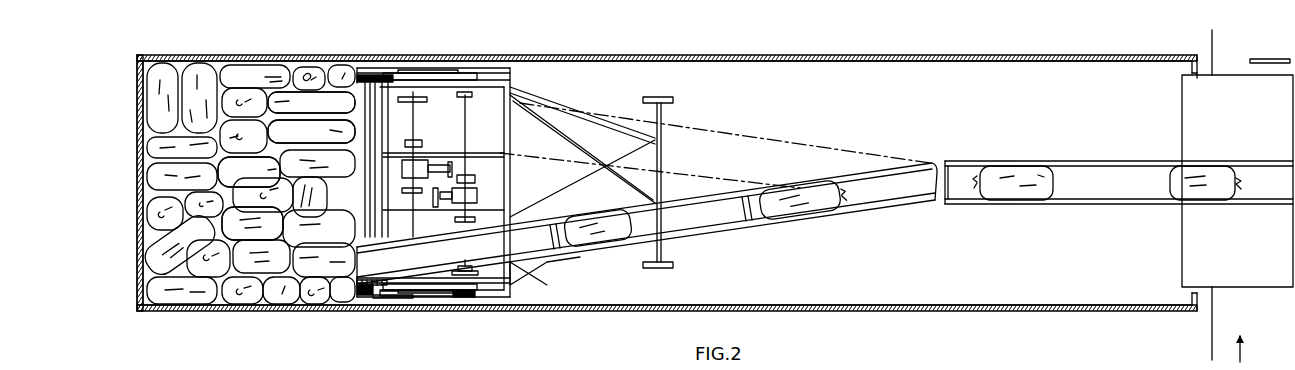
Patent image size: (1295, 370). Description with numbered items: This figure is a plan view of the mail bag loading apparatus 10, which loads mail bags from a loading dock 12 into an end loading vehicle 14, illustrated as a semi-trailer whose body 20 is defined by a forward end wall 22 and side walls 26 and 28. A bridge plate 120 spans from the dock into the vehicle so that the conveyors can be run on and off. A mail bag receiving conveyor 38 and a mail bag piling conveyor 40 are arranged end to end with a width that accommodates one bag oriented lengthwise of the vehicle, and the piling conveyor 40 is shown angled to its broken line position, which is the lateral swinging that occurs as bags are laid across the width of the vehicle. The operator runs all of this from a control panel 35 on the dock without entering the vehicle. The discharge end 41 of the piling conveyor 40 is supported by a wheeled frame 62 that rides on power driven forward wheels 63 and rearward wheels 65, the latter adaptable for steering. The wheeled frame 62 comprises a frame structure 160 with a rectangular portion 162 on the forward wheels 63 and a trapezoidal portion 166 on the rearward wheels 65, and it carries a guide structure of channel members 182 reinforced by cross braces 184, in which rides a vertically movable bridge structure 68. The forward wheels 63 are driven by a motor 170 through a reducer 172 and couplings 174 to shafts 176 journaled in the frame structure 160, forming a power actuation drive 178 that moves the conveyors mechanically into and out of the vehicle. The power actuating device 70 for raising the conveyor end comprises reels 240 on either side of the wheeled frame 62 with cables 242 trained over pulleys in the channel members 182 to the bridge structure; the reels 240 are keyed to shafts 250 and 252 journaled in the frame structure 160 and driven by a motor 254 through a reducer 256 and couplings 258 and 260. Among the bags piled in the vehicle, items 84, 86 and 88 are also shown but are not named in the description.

The loading apparatus embodiment 10 is at (1105, 80).
The loading dock 12 is at (1224, 317).
The end loading vehicle 14 is at (135, 226).
The body 20 is at (1080, 50).
The forward end wall 22 is at (137, 129).
The side wall 26 is at (885, 305).
The side wall 28 is at (905, 62).
The control panel 35 is at (1272, 58).
The mail bag receiving conveyor 38 is at (1112, 153).
The mail bag piling conveyor 40 is at (663, 223).
The discharge end 41 is at (350, 300).
The wheeled frame 62 is at (586, 272).
The forward wheels 63 is at (415, 96).
The rearward wheels 65 is at (660, 97).
The bridge structure 68 is at (342, 222).
The power actuating device 70 is at (469, 304).
The conveyor belt 84 is at (872, 190).
The belt cleat 86 is at (725, 213).
The lower guide bar 88 is at (425, 298).
The bridge plate 120 is at (1266, 262).
The frame structure 160 is at (530, 280).
The rectangular portion 162 is at (488, 70).
The trapezoidal portion 166 is at (574, 102).
The motor 170 is at (443, 163).
The reducer 172 is at (385, 150).
The couplings 174 is at (380, 115).
The shafts 176 is at (413, 118).
The power actuation drive 178 is at (388, 173).
The channel members 182 is at (370, 68).
The cross braces 184 is at (487, 70).
The reels 240 is at (463, 72).
The cables 242 is at (408, 292).
The shaft 250 is at (510, 108).
The shaft 252 is at (478, 264).
The motor 254 is at (444, 204).
The reducer 256 is at (487, 193).
The coupling 258 is at (500, 157).
The coupling 260 is at (477, 213).